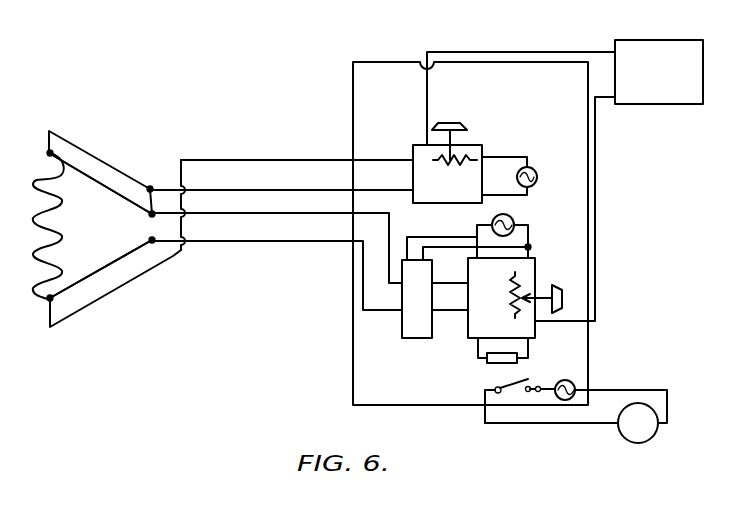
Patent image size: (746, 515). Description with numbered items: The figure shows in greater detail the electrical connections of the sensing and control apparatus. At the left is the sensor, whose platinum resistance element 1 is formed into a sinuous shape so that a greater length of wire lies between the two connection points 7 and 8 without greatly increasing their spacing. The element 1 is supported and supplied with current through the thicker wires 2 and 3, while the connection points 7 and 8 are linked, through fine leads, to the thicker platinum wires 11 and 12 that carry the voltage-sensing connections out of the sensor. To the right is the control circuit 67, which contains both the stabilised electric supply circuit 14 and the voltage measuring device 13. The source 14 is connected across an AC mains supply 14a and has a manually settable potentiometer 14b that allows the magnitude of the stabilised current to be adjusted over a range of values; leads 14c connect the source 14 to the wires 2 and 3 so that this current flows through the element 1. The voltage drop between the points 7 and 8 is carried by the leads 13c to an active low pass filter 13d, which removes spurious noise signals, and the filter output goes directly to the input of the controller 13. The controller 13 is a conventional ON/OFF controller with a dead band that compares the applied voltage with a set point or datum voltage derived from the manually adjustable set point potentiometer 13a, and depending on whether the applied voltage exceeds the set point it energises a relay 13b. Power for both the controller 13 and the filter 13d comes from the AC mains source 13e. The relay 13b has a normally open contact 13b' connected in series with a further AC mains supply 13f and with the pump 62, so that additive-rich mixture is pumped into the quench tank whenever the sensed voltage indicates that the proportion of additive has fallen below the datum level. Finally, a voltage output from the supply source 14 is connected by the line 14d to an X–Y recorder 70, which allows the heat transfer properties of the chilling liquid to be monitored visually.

The resistance element 1 is at (58, 206).
The wire 2 is at (111, 165).
The wire 3 is at (166, 259).
The connection point 7 is at (47, 153).
The connection point 8 is at (51, 296).
The platinum wire 11 is at (89, 178).
The platinum wire 12 is at (124, 258).
The voltage measuring device 13 is at (536, 325).
The set point potentiometer 13a is at (520, 284).
The relay 13b is at (477, 355).
The normally open contact 13b' is at (520, 421).
The leads 13c is at (265, 214).
The active low pass filter 13d is at (411, 313).
The AC mains source 13e is at (517, 219).
The AC mains supply 13f is at (576, 384).
The electric supply circuit 14 is at (483, 146).
The AC mains supply 14a is at (535, 183).
The potentiometer 14b is at (456, 164).
The leads 14c is at (270, 190).
The connection 14d is at (500, 52).
The pump 62 is at (642, 427).
The control circuit 67 is at (368, 383).
The X–Y recorder 70 is at (657, 53).